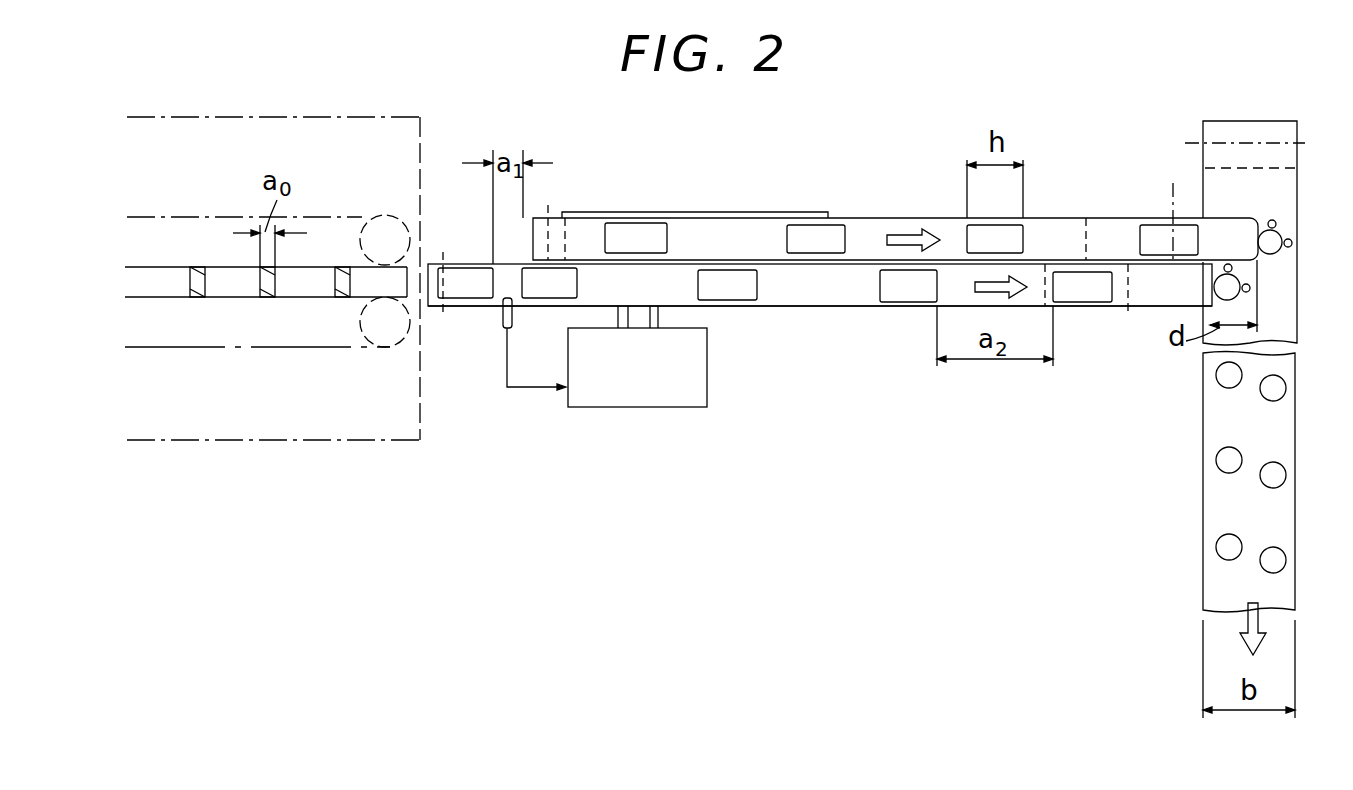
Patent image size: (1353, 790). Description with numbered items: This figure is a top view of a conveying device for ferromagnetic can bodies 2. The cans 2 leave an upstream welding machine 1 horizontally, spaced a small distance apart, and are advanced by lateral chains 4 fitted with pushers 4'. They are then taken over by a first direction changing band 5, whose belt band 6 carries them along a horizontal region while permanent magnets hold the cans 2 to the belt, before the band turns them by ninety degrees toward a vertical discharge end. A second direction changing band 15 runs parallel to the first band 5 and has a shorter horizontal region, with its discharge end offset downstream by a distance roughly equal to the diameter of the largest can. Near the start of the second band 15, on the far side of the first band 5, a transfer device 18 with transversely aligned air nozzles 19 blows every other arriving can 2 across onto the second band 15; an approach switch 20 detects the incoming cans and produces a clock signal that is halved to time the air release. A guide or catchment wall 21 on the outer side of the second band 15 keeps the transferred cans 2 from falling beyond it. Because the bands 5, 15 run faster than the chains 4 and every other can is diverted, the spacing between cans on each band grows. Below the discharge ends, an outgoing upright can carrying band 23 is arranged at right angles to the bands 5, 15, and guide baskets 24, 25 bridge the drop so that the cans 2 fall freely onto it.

The welding machine 1 is at (205, 430).
The can bodies 2 is at (230, 290).
The lateral chains 4 is at (267, 304).
The pushers 4' is at (257, 375).
The first direction changing band 5 is at (797, 318).
The belt band 6 is at (830, 308).
The second direction changing band 15 is at (889, 212).
The transfer device 18 is at (656, 407).
The air nozzles 19 is at (660, 318).
The approach switch 20 is at (500, 320).
The guide or catchment wall 21 is at (700, 212).
The outgoing upright can carrying band 23 is at (1210, 510).
The guide basket 24 is at (1250, 288).
The guide basket 25 is at (1276, 223).